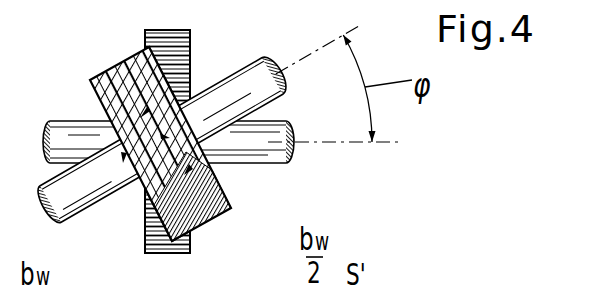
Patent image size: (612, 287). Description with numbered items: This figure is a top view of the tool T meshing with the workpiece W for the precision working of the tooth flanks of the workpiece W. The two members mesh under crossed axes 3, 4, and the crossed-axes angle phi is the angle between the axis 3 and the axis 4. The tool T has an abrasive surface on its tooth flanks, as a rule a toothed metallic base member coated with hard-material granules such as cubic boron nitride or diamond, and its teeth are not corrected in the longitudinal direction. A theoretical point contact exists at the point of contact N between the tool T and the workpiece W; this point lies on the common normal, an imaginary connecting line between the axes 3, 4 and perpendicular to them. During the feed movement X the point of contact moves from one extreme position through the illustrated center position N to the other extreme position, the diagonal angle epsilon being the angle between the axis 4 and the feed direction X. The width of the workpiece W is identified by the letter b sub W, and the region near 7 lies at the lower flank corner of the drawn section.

The axis 3 is at (348, 32).
The axis 4 is at (360, 140).
The tooth flank corner region 7 is at (209, 199).
The tool T is at (103, 72).
The point of contact N is at (216, 168).
The feed movement X is at (147, 188).
The workpiece W is at (146, 253).